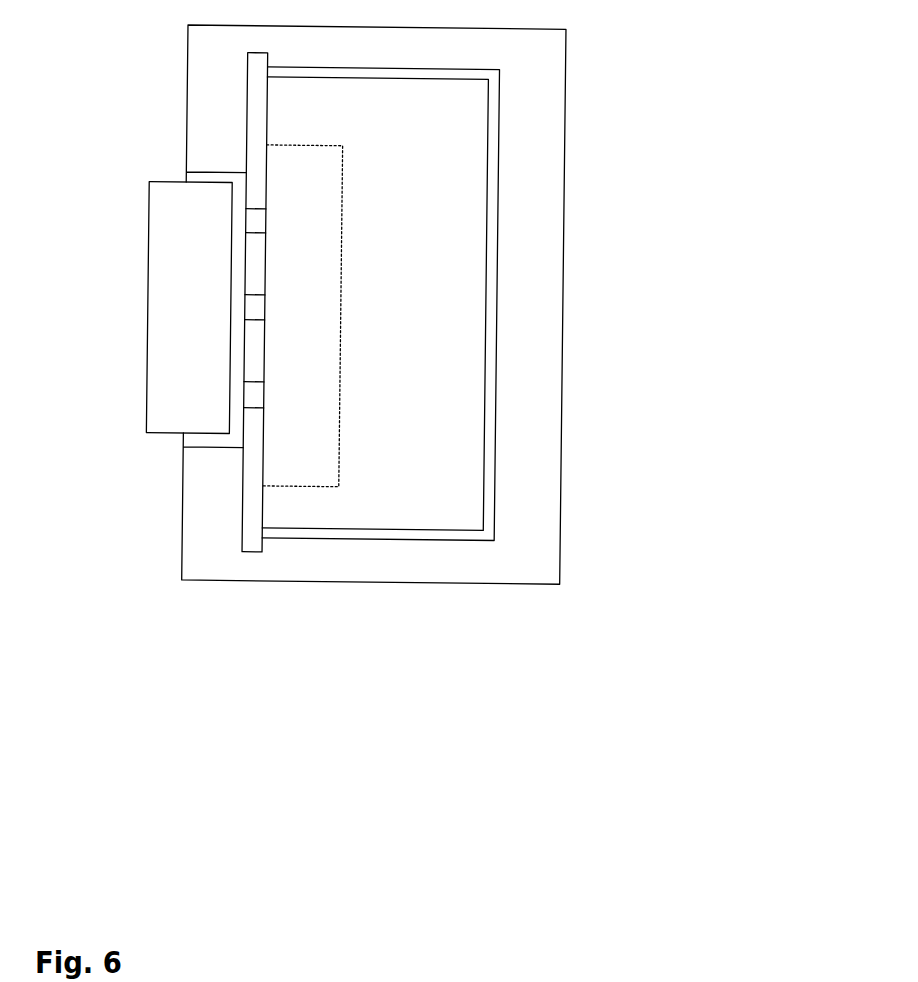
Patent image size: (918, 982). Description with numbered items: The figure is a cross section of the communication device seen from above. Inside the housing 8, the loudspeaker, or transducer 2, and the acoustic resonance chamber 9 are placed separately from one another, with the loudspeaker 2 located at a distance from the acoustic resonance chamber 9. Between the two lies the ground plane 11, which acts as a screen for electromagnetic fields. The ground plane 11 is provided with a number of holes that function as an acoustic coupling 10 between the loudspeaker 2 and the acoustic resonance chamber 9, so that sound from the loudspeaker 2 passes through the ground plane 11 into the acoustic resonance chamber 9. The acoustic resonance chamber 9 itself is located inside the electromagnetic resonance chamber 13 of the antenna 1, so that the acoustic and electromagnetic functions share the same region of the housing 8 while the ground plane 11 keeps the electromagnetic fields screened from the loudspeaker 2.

The antenna 1 is at (503, 322).
The loudspeaker 2 is at (186, 312).
The housing 8 is at (578, 524).
The acoustic resonance chamber 9 is at (320, 216).
The acoustic coupling 10 is at (254, 392).
The ground plane 11 is at (243, 522).
The electromagnetic resonance chamber 13 is at (407, 438).